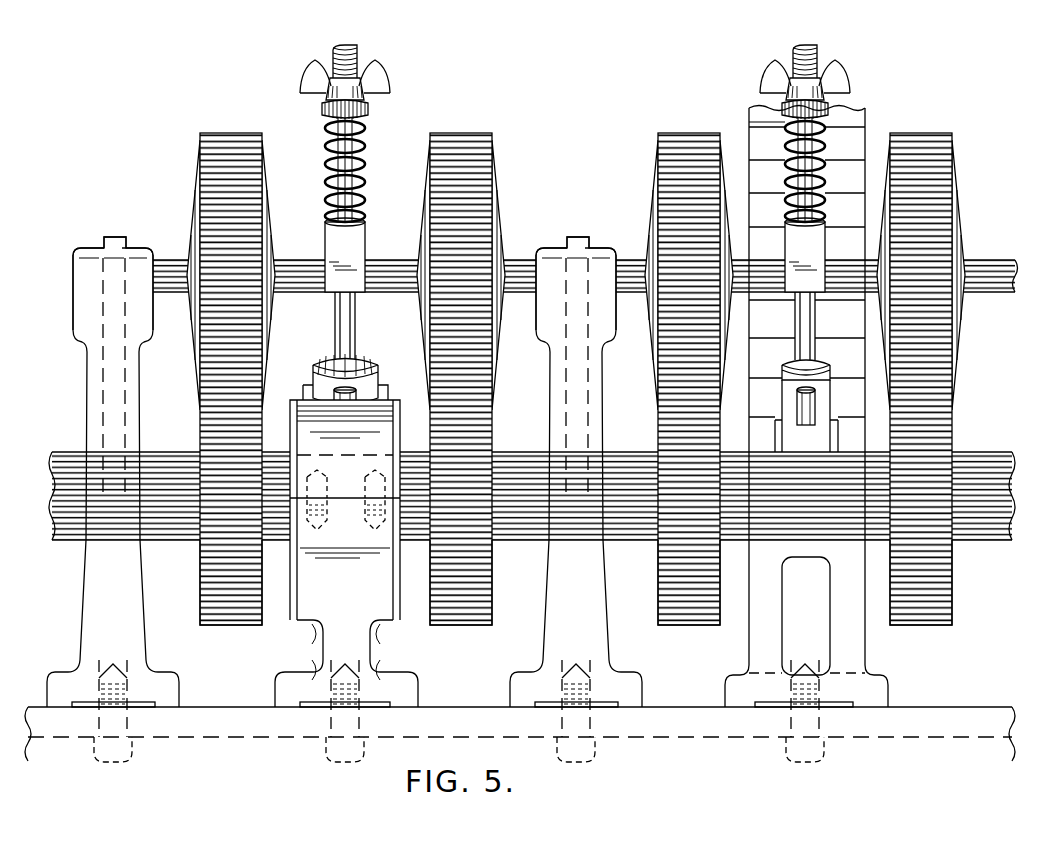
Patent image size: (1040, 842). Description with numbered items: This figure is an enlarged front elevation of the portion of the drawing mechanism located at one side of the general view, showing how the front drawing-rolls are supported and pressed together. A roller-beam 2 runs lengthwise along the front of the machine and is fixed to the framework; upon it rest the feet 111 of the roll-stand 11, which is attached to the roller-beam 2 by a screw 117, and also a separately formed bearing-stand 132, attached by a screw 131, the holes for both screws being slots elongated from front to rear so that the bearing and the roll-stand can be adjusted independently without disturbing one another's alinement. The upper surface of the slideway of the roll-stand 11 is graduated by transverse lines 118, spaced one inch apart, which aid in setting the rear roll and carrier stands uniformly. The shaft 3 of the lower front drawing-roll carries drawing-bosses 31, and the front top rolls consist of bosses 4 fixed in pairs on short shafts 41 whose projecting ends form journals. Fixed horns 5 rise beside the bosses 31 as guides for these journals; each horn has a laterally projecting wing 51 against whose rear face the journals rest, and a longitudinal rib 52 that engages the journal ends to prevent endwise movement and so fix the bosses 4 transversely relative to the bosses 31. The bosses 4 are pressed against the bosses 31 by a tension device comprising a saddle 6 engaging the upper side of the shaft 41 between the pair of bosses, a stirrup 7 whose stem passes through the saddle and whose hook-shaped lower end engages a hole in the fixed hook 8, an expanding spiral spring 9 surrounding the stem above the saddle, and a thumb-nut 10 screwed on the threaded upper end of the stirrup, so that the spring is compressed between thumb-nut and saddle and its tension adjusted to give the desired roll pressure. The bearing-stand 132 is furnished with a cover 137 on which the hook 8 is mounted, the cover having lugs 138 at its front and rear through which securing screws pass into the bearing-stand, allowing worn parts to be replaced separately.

The roller-beam 2 is at (200, 707).
The shaft of the lower front drawing-roll 3 is at (985, 470).
The bosses of the front top rolls 4 is at (232, 152).
The short shaft 41 is at (292, 270).
The horn 5 is at (115, 370).
The wing 51 is at (86, 247).
The rib 52 is at (117, 237).
The saddle 6 is at (352, 243).
The stirrup 7 is at (333, 330).
The hook 8 is at (362, 370).
The expanding spiral spring 9 is at (368, 137).
The thumb-nut 10 is at (362, 90).
The roll-stand 11 is at (866, 112).
The drawing-bosses 31 is at (222, 612).
The feet 111 is at (857, 660).
The screw 117 is at (800, 757).
The transverse lines 118 is at (750, 122).
The screw 131 is at (330, 755).
The bearing-stand 132 is at (334, 645).
The cover 137 is at (392, 447).
The lugs 138 is at (330, 492).